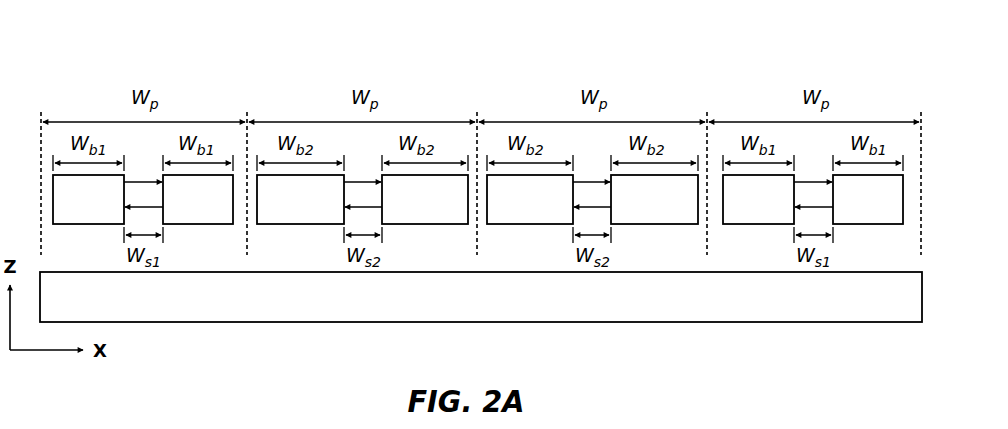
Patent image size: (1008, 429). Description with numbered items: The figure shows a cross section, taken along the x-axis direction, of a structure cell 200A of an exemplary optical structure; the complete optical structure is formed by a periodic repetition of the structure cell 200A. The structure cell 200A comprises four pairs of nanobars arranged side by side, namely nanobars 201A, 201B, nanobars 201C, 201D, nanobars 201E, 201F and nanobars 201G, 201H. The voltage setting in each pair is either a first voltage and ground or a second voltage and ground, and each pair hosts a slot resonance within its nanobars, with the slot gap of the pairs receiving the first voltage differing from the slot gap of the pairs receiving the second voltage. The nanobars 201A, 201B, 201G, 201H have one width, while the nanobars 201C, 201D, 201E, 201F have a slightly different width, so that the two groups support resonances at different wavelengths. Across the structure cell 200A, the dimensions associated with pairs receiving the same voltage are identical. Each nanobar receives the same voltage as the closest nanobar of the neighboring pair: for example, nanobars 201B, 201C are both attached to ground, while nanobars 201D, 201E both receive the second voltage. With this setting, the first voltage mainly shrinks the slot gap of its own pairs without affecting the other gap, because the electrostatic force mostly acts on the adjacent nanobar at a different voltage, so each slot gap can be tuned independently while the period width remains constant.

The nanobar 201A is at (74, 180).
The nanobar 201B is at (183, 180).
The nanobar 201C is at (280, 180).
The nanobar 201D is at (402, 180).
The nanobar 201E is at (510, 180).
The nanobar 201F is at (632, 180).
The nanobar 201G is at (743, 180).
The nanobar 201H is at (853, 180).
The structure cell 200A is at (810, 363).